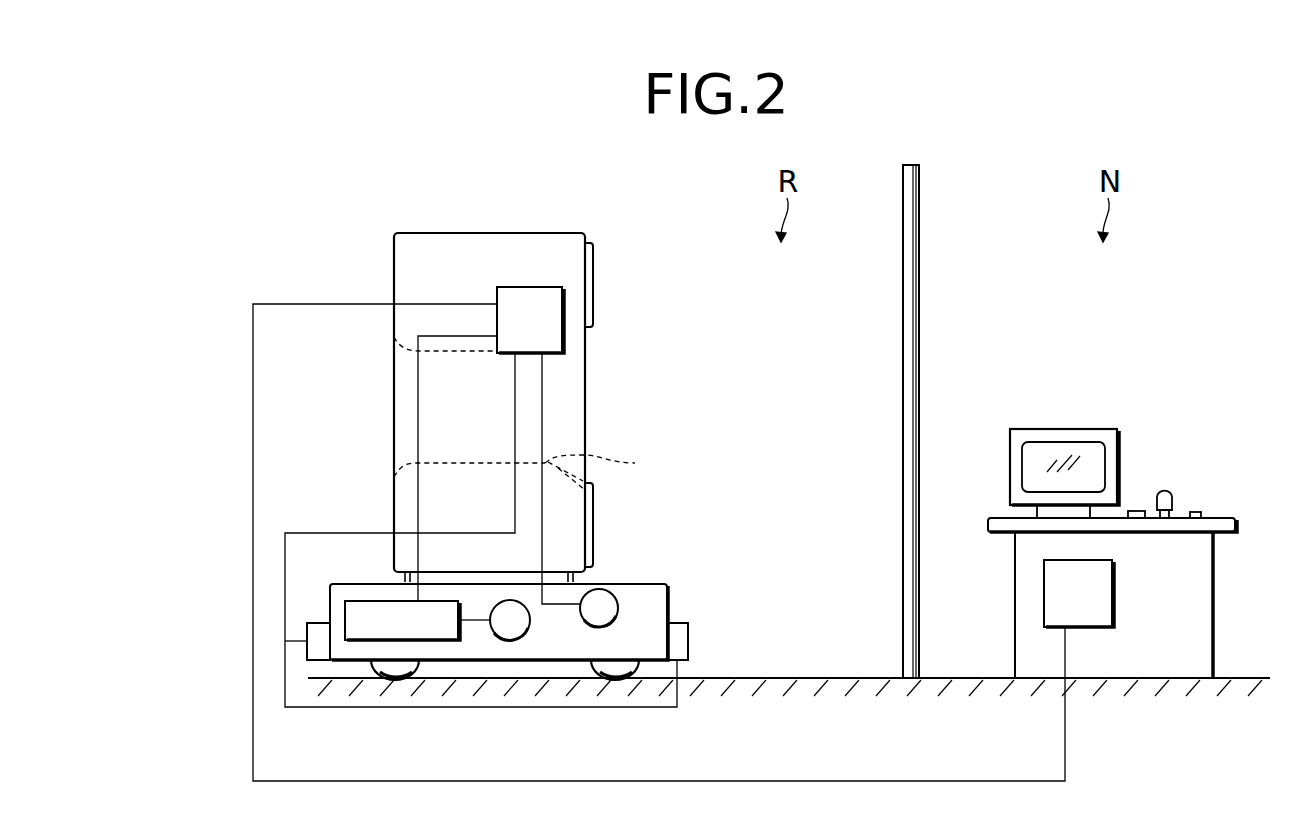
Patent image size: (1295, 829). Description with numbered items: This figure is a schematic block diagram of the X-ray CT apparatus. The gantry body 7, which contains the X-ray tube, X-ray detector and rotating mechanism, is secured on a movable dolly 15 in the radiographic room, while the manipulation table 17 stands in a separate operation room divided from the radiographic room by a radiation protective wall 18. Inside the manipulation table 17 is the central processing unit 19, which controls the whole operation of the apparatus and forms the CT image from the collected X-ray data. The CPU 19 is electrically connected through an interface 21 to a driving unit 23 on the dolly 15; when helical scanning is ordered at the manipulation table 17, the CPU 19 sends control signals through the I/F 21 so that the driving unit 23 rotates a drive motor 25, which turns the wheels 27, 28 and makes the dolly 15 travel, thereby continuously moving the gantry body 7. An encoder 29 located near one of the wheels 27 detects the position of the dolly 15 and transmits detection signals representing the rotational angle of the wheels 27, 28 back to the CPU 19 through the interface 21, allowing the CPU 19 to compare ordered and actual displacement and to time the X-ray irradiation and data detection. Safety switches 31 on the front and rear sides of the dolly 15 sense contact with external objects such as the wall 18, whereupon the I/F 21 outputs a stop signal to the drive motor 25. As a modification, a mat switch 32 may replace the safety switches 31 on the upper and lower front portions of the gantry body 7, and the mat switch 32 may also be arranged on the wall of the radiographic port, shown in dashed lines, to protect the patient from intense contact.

The gantry body 7 is at (593, 262).
The movable dolly 15 is at (330, 603).
The manipulation table (console) 17 is at (1044, 410).
The radiation protective wall 18 is at (919, 230).
The central processing unit (CPU) 19 is at (1112, 592).
The interface (I/F) 21 is at (562, 328).
The driving unit 23 is at (362, 600).
The drive motor 25 is at (510, 640).
The wheel 27 is at (612, 678).
The wheel 28 is at (392, 678).
The encoder 29 is at (607, 590).
The safety switch 31 is at (317, 662).
The mat switch 32 is at (593, 246).